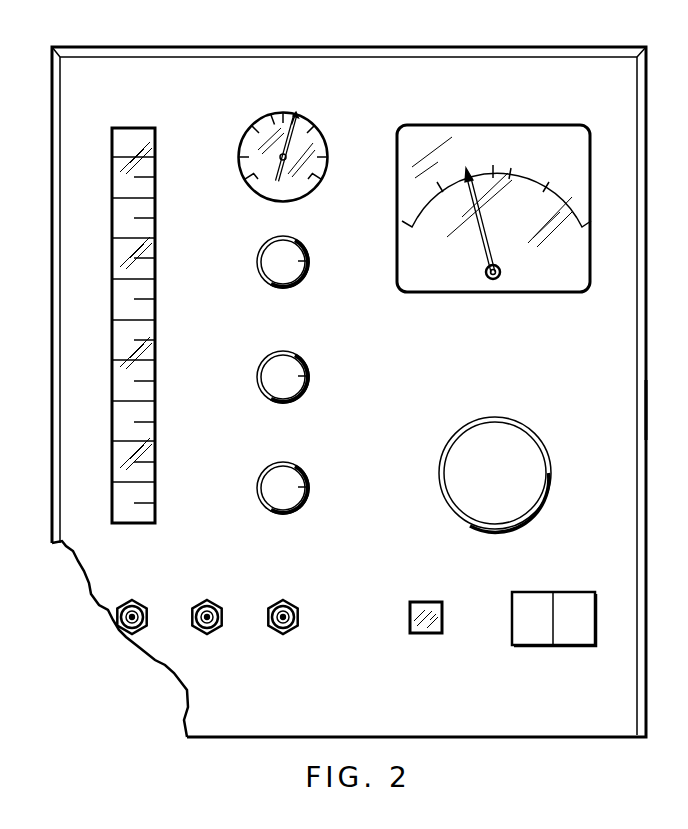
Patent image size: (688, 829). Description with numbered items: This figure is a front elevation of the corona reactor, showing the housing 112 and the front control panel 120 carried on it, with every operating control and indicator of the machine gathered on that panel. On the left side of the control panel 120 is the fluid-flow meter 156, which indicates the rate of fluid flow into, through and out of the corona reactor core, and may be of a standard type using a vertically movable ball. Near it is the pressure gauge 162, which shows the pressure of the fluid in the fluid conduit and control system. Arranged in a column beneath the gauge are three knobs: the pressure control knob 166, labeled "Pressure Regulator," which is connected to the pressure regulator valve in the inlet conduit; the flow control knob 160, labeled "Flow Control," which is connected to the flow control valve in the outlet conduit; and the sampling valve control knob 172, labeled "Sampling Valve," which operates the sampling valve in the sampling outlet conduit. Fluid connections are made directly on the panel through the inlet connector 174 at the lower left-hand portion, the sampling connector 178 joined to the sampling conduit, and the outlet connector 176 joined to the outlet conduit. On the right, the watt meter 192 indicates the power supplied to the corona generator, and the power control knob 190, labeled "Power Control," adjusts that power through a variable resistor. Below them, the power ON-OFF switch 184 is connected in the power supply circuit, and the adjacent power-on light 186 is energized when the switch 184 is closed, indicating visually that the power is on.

The housing 112 is at (628, 421).
The front control panel 120 is at (687, 346).
The fluid-flow meter 156 is at (150, 186).
The pressure gauge 162 is at (255, 183).
The pressure control knob 166 is at (305, 250).
The flow control knob 160 is at (305, 365).
The sampling valve control knob 172 is at (305, 477).
The watt meter 192 is at (512, 133).
The power control knob 190 is at (535, 450).
The inlet connector 174 is at (142, 627).
The sampling connector 178 is at (222, 617).
The outlet connector 176 is at (296, 617).
The power-on light 186 is at (433, 603).
The power ON-OFF switch 184 is at (580, 597).